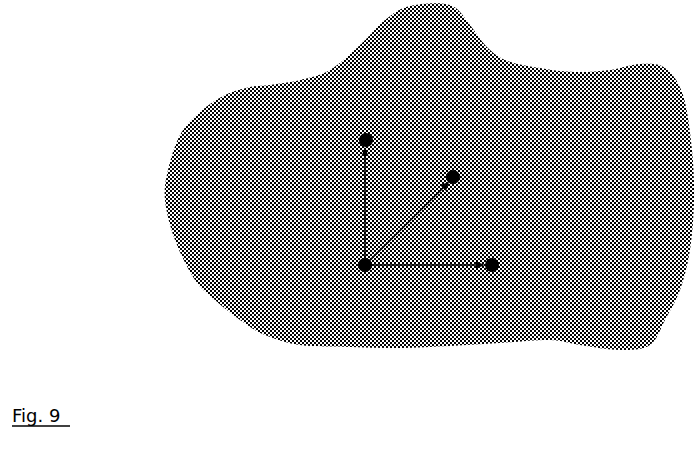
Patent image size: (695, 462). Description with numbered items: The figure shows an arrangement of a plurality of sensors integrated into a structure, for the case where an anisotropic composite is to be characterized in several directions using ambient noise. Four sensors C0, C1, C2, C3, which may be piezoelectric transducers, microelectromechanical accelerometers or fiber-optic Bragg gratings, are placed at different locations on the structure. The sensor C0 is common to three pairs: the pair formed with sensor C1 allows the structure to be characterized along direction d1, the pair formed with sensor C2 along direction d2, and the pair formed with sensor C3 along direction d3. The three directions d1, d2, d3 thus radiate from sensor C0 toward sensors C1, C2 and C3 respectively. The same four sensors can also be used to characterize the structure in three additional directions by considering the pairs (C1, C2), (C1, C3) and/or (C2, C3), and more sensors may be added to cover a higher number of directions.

The sensor C0 is at (361, 258).
The sensor C1 is at (362, 133).
The sensor C2 is at (450, 170).
The sensor C3 is at (500, 268).
The direction d1 is at (363, 196).
The direction d2 is at (423, 202).
The direction d3 is at (372, 272).